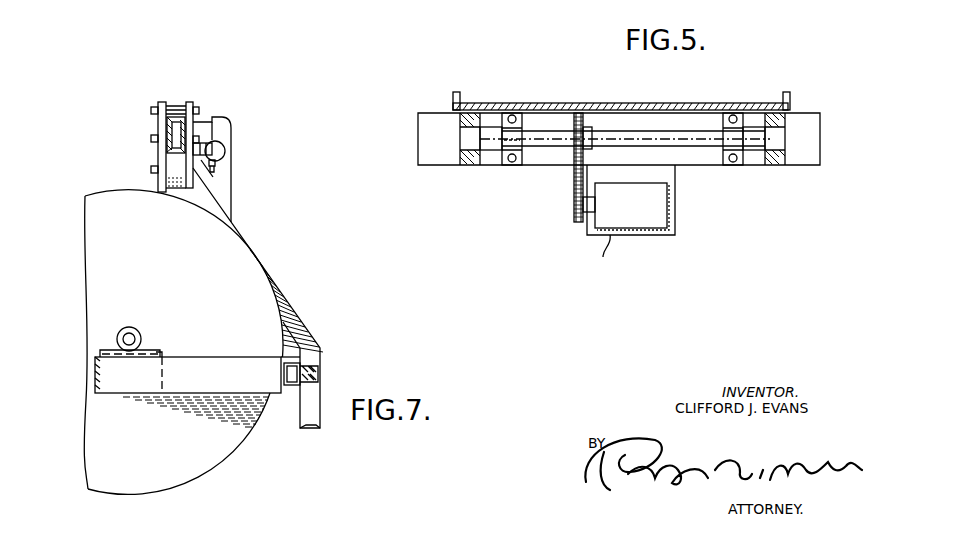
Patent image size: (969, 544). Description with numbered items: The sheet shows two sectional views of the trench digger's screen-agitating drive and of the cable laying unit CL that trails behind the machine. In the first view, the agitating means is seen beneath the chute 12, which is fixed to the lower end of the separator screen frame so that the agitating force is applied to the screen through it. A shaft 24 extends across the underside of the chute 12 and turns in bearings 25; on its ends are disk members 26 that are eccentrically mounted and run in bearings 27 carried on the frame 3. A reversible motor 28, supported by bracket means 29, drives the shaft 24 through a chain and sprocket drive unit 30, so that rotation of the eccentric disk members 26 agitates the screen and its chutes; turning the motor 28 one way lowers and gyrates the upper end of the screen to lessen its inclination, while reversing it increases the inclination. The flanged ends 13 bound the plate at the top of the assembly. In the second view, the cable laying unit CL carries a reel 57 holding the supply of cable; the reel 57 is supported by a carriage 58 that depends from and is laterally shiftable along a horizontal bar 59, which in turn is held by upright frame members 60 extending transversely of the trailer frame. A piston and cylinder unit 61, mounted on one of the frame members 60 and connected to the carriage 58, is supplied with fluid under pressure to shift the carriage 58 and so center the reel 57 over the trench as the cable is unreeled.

In FIG. 5, the frame 3 is at (803, 121).
In FIG. 5, the chute 12 is at (580, 103).
In FIG. 5, the flange 13 is at (457, 97).
In FIG. 5, the shaft 24 is at (718, 133).
In FIG. 5, the bearings 25 is at (506, 162).
In FIG. 5, the disk members 26 is at (461, 156).
In FIG. 5, the bearings 27 is at (482, 160).
In FIG. 5, the reversible motor 28 is at (650, 218).
In FIG. 5, the bracket means 29 is at (673, 221).
In FIG. 5, the chain and sprocket drive unit 30 is at (573, 184).
In FIG. 7, the reel 57 is at (222, 260).
In FIG. 7, the carriage 58 is at (154, 170).
In FIG. 7, the horizontal bar 59 is at (178, 112).
In FIG. 7, the upright frame members 60 is at (232, 183).
In FIG. 7, the piston and cylinder unit 61 is at (236, 145).
In FIG. 7, the conduit or cable laying unit CL is at (296, 300).